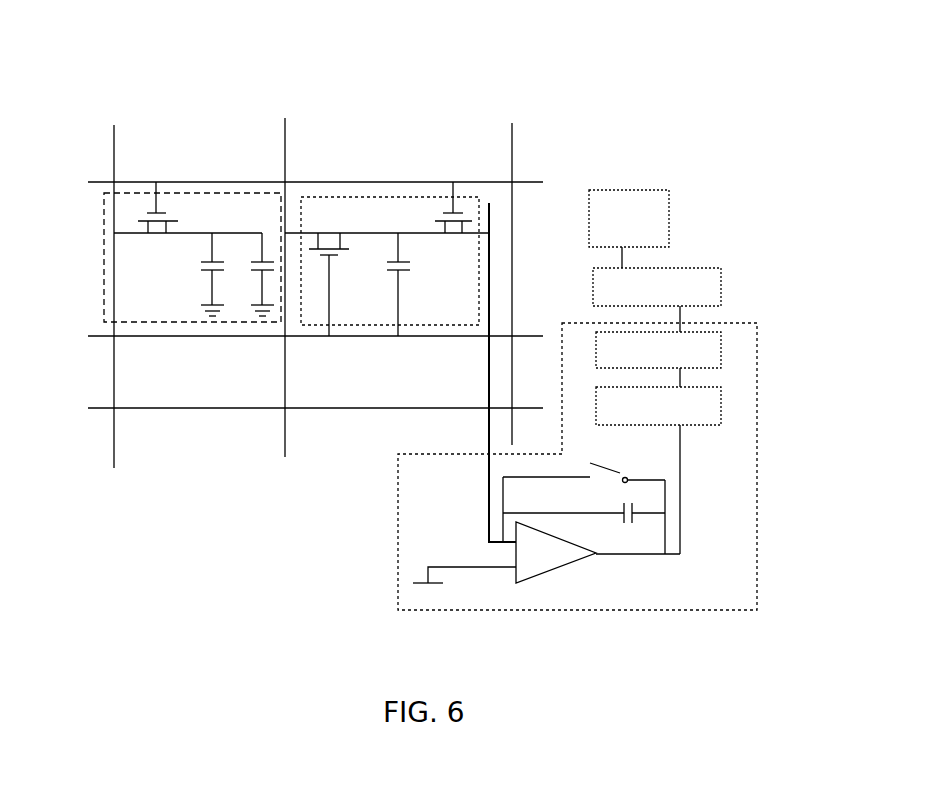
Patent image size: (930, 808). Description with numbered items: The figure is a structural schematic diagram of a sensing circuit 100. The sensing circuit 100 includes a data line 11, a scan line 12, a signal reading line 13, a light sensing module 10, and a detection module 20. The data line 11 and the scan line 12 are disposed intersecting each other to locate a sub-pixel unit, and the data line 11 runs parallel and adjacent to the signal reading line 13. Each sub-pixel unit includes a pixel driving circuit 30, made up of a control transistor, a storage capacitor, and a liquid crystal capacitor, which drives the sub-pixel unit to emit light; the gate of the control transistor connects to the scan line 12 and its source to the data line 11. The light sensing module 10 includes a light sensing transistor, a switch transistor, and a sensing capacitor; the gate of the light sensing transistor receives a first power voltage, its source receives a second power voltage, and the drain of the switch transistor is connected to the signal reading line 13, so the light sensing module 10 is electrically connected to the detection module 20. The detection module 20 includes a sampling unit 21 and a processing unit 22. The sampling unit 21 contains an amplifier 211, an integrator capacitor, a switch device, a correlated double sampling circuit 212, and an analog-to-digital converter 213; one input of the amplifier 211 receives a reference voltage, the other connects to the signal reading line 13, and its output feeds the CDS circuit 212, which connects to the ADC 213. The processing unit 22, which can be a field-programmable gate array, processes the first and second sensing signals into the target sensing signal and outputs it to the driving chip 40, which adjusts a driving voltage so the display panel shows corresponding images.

The sensing circuit 100 is at (108, 52).
The light sensing module 10 is at (403, 182).
The data line 11 is at (112, 150).
The scan line 12 is at (205, 182).
The signal reading line 13 is at (486, 425).
The pixel driving circuit 30 is at (104, 262).
The driving chip 40 is at (669, 190).
The detection module 20 is at (610, 437).
The sampling unit 21 is at (609, 454).
The processing unit 22 is at (705, 268).
The amplifier 211 is at (556, 572).
The correlated double sampling (CDS) circuit 212 is at (722, 408).
The analog-to-digital converter (ADC) 213 is at (722, 350).